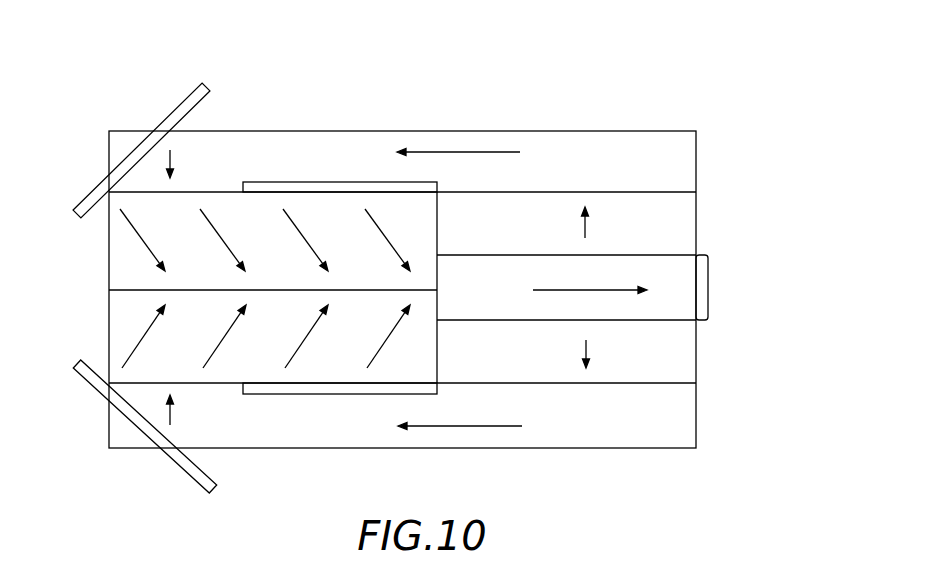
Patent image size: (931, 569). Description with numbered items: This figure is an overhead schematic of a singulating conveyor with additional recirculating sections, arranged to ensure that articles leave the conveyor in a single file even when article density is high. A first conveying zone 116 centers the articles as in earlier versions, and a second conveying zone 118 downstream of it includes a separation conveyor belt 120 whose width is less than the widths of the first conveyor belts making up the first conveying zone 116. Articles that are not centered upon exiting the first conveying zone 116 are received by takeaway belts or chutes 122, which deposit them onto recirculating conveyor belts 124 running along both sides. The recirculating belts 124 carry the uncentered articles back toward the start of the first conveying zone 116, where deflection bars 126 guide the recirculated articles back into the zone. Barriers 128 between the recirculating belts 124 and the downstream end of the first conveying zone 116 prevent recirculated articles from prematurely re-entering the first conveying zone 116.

The first conveying zone 116 is at (117, 253).
The second conveying zone 118 is at (700, 258).
The separation conveyor belt 120 is at (702, 320).
The takeaway belts 122 is at (683, 203).
The recirculating conveyor belts 124 is at (602, 131).
The deflection bars 126 is at (203, 98).
The barriers 128 is at (317, 187).